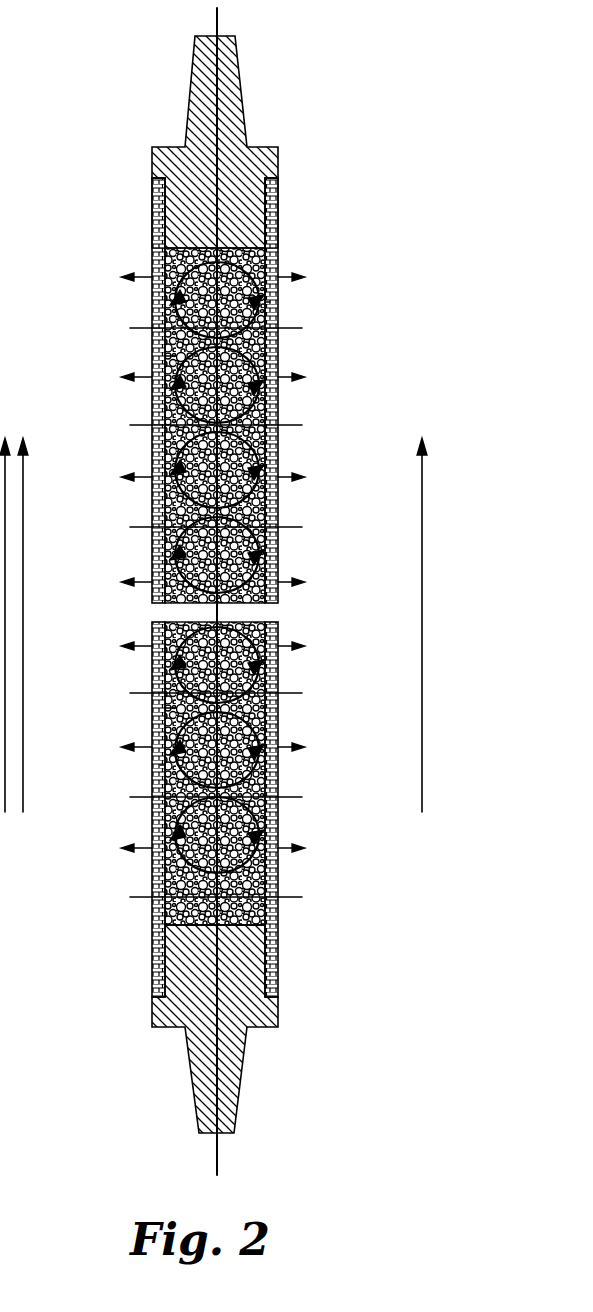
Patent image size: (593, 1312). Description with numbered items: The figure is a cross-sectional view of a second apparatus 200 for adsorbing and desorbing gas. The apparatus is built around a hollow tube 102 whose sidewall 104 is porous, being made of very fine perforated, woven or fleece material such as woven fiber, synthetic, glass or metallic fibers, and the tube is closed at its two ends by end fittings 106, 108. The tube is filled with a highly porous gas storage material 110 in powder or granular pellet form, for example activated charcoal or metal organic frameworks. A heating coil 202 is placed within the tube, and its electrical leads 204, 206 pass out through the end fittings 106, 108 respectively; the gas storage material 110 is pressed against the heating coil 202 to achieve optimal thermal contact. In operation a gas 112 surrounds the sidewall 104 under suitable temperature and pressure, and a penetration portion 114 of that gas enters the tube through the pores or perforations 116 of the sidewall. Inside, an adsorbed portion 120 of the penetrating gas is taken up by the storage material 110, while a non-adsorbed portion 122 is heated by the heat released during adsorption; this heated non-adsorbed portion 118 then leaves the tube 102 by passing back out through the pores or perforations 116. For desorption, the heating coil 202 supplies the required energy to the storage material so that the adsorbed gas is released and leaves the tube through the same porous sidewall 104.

The second apparatus 200 is at (308, 60).
The electrical lead 204 is at (217, 18).
The electrical lead 206 is at (217, 1160).
The end fitting 106 is at (243, 100).
The end fitting 108 is at (191, 1085).
The highly porous gas storage material 110 is at (165, 927).
The hollow tube 102 is at (152, 298).
The sidewall 104 is at (152, 196).
The gas 112 is at (23, 543).
The penetration portion 114 is at (132, 328).
The pores or perforations 116 is at (152, 428).
The heated non-adsorbed portion 118 is at (130, 277).
The adsorbed portion 120 is at (165, 356).
The non-adsorbed portion 122 is at (278, 302).
The heating coil 202 is at (278, 357).